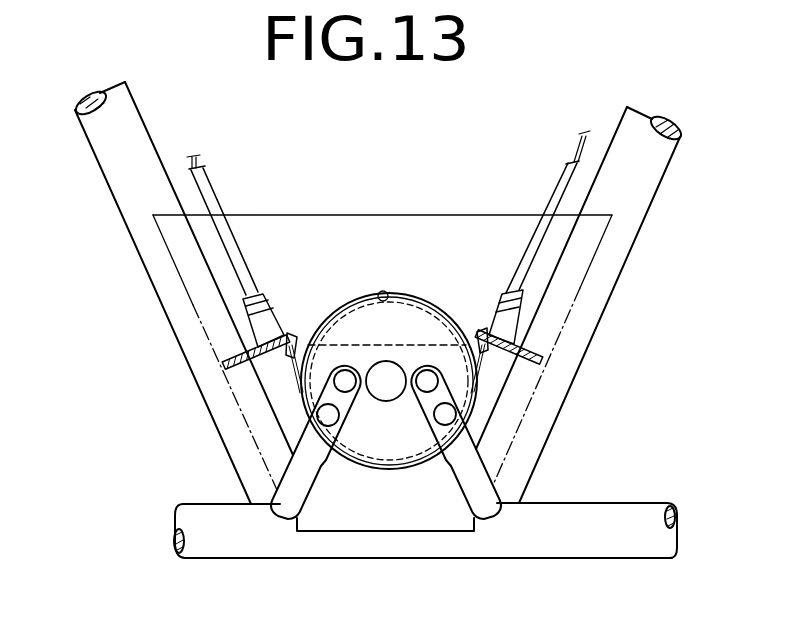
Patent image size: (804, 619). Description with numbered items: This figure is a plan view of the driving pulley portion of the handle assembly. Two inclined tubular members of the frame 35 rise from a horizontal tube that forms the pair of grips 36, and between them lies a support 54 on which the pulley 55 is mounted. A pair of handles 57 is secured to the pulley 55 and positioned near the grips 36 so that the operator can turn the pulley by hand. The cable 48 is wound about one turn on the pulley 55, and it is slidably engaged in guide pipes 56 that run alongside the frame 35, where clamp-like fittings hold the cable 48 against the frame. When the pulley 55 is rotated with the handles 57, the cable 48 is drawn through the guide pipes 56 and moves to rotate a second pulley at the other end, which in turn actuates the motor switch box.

The frame 35 is at (97, 157).
The grips 36 is at (198, 504).
The cable 48 is at (292, 336).
The support 54 is at (394, 214).
The pulley 55 is at (347, 300).
The guide pipes 56 is at (208, 178).
The handles 57 is at (460, 487).